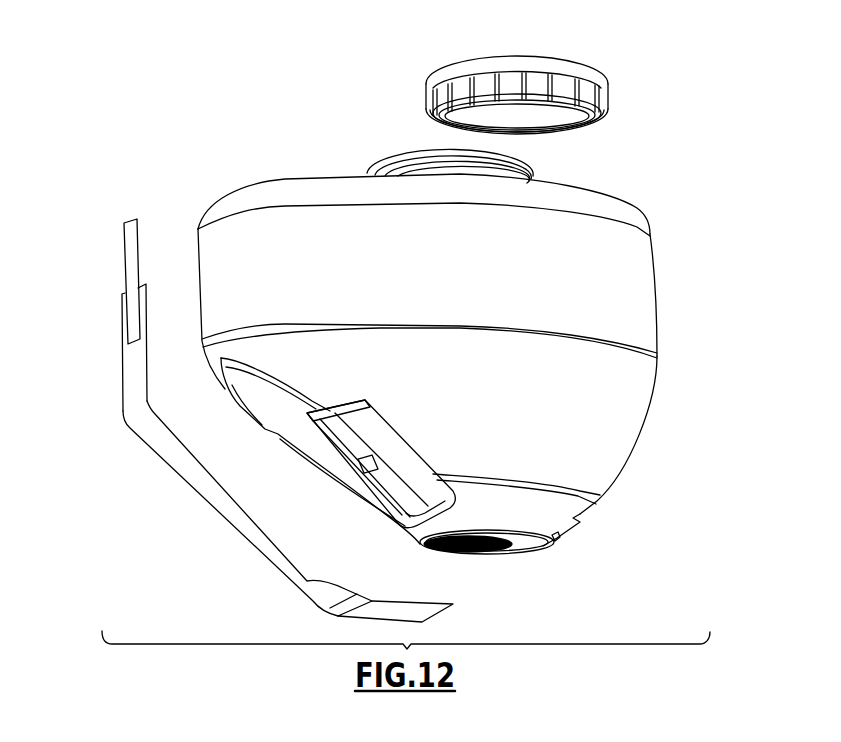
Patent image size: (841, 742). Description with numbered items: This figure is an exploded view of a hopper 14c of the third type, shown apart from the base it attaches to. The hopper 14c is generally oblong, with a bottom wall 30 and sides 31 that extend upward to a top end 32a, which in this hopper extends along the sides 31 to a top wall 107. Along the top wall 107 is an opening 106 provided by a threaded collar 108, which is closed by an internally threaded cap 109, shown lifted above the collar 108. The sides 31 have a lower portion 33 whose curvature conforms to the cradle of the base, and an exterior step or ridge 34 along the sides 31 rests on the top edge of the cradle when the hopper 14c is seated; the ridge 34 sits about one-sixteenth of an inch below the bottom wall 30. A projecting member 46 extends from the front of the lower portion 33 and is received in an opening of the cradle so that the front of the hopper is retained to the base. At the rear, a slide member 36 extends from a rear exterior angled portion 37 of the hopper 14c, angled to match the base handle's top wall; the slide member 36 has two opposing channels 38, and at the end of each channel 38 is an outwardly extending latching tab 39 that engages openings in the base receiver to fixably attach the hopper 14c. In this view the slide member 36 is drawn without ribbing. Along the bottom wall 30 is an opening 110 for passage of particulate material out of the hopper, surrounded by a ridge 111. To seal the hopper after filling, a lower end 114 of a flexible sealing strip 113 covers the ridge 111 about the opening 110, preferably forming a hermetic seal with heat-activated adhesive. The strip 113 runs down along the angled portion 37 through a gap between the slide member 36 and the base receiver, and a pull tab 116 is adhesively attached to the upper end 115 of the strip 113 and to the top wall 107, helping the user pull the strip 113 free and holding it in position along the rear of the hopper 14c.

The internally threaded cap 109 is at (608, 90).
The threaded collar 108 is at (535, 173).
The opening 106 is at (410, 153).
The top wall 107 is at (311, 177).
The top end 32a is at (640, 212).
The hopper 14c is at (657, 293).
The sides 31 is at (627, 427).
The lower portion 33 is at (557, 498).
The ridge 34 is at (600, 500).
The projecting member 46 is at (567, 533).
The bottom wall 30 is at (533, 548).
The opening 110 is at (460, 554).
The ridge 111 is at (433, 552).
The slide member 36 is at (310, 447).
The rear exterior angled portion 37 is at (412, 457).
The channels 38 is at (365, 402).
The tab 39 is at (405, 460).
The flexible strip 113 is at (217, 505).
The lower end 114 is at (442, 600).
The upper end 115 is at (122, 310).
The pull tab 116 is at (130, 236).